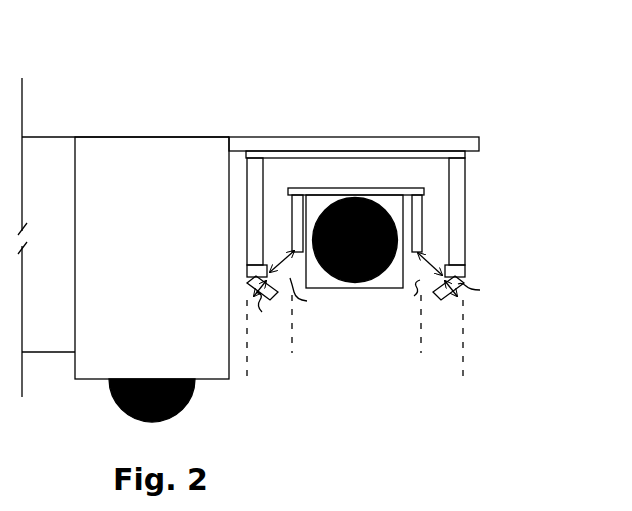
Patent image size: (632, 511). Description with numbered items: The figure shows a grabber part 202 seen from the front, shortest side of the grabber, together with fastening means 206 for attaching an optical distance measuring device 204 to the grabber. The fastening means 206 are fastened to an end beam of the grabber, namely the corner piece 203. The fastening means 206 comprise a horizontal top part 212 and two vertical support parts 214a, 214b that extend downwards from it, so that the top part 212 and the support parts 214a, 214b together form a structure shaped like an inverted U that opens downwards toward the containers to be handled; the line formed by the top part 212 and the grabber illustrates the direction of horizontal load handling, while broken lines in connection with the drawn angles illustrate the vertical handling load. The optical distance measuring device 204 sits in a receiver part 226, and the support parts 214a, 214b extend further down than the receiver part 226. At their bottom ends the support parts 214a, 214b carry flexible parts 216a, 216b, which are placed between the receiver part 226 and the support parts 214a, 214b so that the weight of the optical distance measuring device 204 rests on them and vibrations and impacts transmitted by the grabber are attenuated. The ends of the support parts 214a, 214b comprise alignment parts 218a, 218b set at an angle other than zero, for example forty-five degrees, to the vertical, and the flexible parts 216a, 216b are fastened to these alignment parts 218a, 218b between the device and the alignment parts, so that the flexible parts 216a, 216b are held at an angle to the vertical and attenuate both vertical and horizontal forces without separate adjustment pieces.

The grabber part 202 is at (123, 237).
The corner piece 203 is at (152, 279).
The optical distance measuring device 204 is at (380, 290).
The fastening means 206 is at (306, 118).
The top part 212 is at (424, 137).
The first vertical support part 214a is at (264, 200).
The second vertical support part 214b is at (466, 218).
The first flexible part 216a is at (262, 267).
The second flexible part 216b is at (447, 270).
The first alignment part 218a is at (276, 298).
The second alignment part 218b is at (446, 296).
The receiver part 226 is at (371, 187).